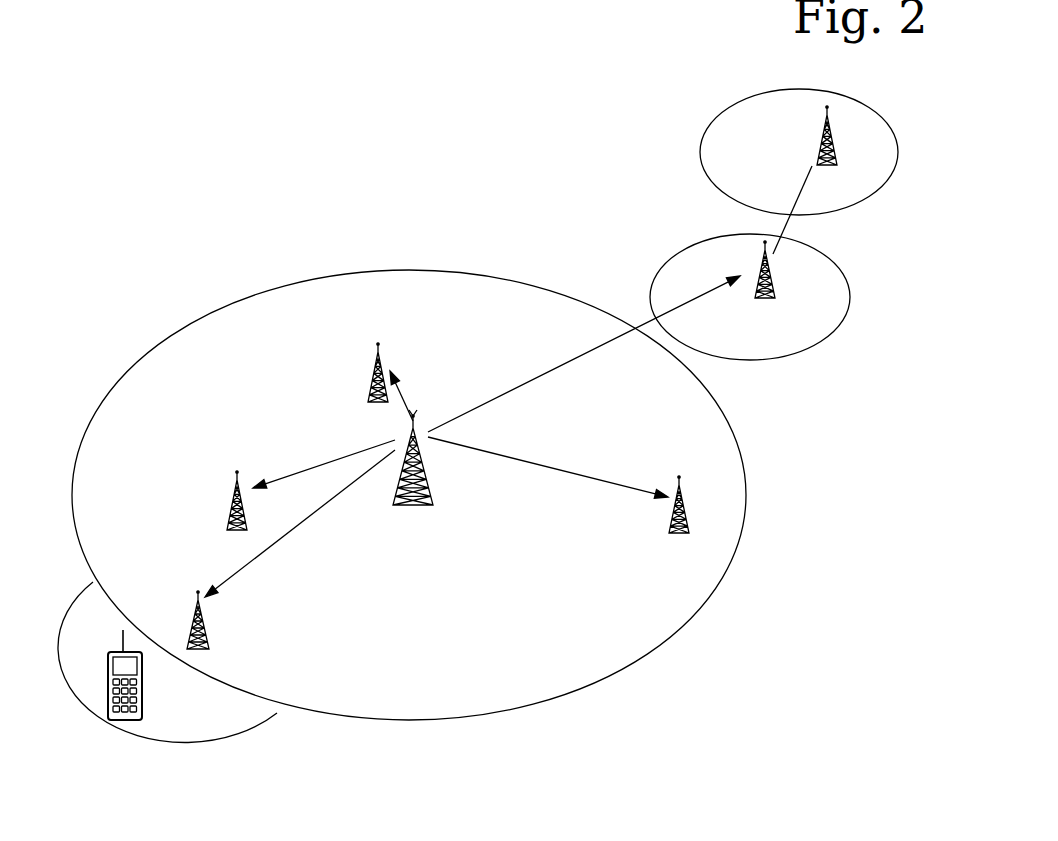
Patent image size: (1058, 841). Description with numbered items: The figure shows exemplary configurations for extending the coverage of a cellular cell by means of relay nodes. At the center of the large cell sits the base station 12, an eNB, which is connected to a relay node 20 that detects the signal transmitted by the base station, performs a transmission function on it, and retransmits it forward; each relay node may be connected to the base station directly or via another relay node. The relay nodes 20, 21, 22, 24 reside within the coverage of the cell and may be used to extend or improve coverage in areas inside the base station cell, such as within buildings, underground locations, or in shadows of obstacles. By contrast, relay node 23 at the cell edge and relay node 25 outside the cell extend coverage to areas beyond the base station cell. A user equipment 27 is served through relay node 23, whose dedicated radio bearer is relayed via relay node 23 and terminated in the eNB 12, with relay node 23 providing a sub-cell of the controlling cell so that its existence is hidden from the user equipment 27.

The base station 12 is at (432, 504).
The relay node 20 is at (368, 378).
The relay node 21 is at (670, 535).
The relay node 22 is at (228, 506).
The relay node 23 is at (212, 625).
The relay node 24 is at (772, 300).
The relay node 25 is at (818, 143).
The user equipment 27 is at (148, 700).